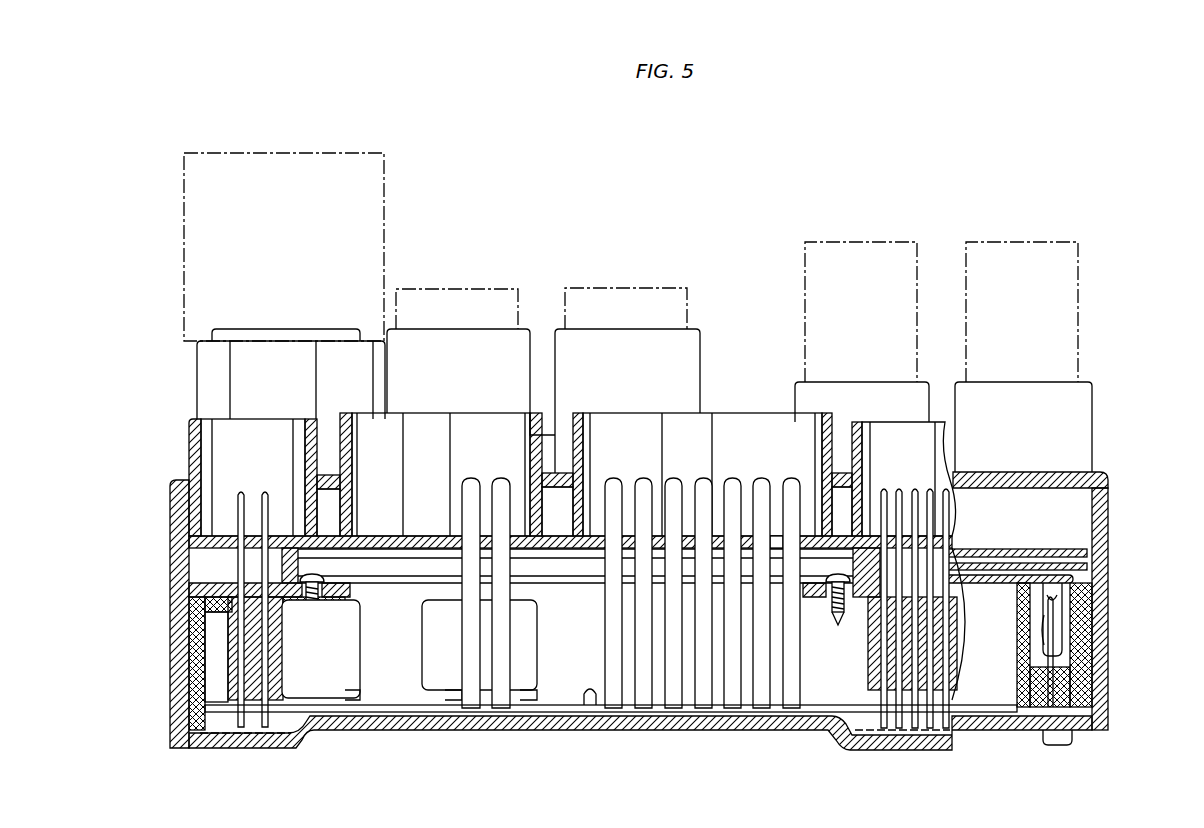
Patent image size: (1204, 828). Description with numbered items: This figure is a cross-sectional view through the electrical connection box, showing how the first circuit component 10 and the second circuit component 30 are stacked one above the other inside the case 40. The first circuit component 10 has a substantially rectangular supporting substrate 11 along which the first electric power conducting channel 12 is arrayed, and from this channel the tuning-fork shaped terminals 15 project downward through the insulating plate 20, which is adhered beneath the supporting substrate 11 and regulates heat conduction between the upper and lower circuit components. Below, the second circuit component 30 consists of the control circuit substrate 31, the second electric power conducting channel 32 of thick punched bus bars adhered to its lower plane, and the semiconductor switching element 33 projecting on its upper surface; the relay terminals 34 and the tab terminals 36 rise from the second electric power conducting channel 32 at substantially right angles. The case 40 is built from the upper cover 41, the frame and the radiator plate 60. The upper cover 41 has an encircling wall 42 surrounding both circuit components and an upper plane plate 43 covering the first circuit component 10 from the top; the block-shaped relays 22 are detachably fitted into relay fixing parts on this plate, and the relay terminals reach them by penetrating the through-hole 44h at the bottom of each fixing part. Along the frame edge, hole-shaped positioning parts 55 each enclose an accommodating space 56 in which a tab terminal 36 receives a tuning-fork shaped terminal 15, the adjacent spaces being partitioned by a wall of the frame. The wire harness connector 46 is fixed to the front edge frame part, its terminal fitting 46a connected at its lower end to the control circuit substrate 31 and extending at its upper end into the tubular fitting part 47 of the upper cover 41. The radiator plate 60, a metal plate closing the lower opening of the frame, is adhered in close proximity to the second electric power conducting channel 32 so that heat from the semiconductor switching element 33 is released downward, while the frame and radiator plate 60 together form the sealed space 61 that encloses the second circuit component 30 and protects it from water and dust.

The first circuit component 10 is at (1126, 398).
The supporting substrate 11 is at (997, 555).
The first electric power conducting channel 12 is at (1050, 552).
The tuning-fork shaped terminal 15 is at (1093, 577).
The insulating plate 20 is at (985, 583).
The relay 22 is at (438, 289).
The second circuit component 30 is at (490, 726).
The control circuit substrate 31 is at (590, 704).
The second electric power conducting channel 32 is at (627, 712).
The semiconductor switching element 33 is at (438, 635).
The relay terminal 34 is at (704, 650).
The tab terminal 36 is at (1053, 677).
The case 40 is at (170, 406).
The upper cover 41 is at (1093, 480).
The encircling wall 42 is at (1108, 594).
The upper plane plate 43 is at (1040, 470).
The through-hole 44h is at (770, 538).
The wire harness connector 46 is at (235, 655).
The terminal fitting 46a is at (240, 508).
The tubular fitting part 47 is at (190, 440).
The positioning part 55 is at (1063, 622).
The accommodating space 56 is at (1062, 660).
The radiator plate 60 is at (786, 729).
The sealed space 61 is at (568, 635).